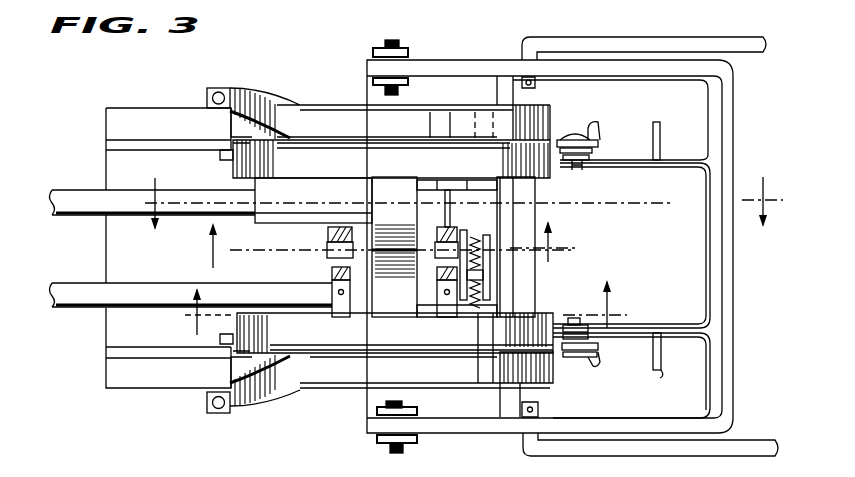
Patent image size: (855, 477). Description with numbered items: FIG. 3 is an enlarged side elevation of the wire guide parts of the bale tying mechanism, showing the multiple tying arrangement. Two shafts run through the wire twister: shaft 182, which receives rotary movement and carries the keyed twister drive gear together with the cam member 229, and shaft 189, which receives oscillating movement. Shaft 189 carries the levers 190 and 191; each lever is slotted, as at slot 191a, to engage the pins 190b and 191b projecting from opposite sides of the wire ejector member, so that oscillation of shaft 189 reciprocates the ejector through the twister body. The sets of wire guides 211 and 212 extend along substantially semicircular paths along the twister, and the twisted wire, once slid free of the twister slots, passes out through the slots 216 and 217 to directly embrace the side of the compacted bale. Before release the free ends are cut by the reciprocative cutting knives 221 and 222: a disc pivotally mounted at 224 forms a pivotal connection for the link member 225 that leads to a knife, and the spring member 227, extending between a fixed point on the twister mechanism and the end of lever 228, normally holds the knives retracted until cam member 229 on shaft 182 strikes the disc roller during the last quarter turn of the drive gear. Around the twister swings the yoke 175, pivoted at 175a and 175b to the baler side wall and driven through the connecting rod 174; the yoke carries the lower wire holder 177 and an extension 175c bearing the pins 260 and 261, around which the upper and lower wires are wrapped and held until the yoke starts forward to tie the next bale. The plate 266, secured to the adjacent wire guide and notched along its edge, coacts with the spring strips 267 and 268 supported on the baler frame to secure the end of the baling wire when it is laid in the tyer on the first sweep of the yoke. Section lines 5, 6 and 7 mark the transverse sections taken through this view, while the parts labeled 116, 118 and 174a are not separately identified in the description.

The upper solenoid 116 is at (600, 148).
The coil 118 is at (398, 172).
The connecting rod 174 is at (668, 47).
The lower rail 174a is at (688, 448).
The yoke 175 is at (728, 116).
The yoke pivot 175a is at (397, 42).
The yoke pivot 175b is at (407, 445).
The extension 175c is at (632, 163).
The wire holder 177 is at (603, 355).
The shaft 182 is at (80, 197).
The shaft 189 is at (75, 311).
The lever 190 is at (333, 272).
The pin 190b is at (327, 251).
The lever 191 is at (450, 307).
The slot 191a is at (457, 250).
The pin 191b is at (493, 230).
The wire guide 211 is at (297, 148).
The wire guide 212 is at (318, 333).
The slot 216 is at (206, 106).
The slot 217 is at (240, 360).
The cutting knife 221 is at (470, 225).
The cutting knife 222 is at (440, 306).
The pivotal mounting 224 is at (505, 258).
The link member 225 is at (553, 140).
The spring member 227 is at (467, 290).
The lever 228 is at (417, 263).
The cam member 229 is at (450, 200).
The pin 260 is at (661, 134).
The pin 261 is at (661, 378).
The plate 266 is at (213, 158).
The spring strip 267 is at (228, 136).
The spring strip 268 is at (230, 360).
The section line 5— 5 is at (463, 194).
The section line 6— 6 is at (386, 244).
The section line 7— 7 is at (403, 307).